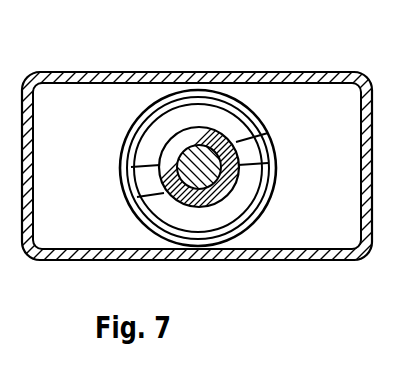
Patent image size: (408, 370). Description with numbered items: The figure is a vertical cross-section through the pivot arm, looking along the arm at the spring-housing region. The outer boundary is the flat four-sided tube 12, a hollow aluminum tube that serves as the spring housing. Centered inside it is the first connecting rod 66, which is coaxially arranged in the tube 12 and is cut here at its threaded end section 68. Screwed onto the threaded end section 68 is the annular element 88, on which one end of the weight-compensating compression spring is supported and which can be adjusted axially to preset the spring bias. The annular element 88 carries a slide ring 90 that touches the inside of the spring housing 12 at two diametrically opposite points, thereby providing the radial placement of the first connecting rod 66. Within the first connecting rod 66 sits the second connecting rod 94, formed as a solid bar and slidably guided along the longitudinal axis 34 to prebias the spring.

The four-sided tube 12 is at (289, 74).
The slide ring 90 is at (138, 121).
The annular element 88 is at (273, 194).
The threaded end section 68 is at (228, 128).
The first connecting rod 66 is at (160, 148).
The second connecting rod 94 is at (218, 200).
The longitudinal axis 34 is at (131, 212).